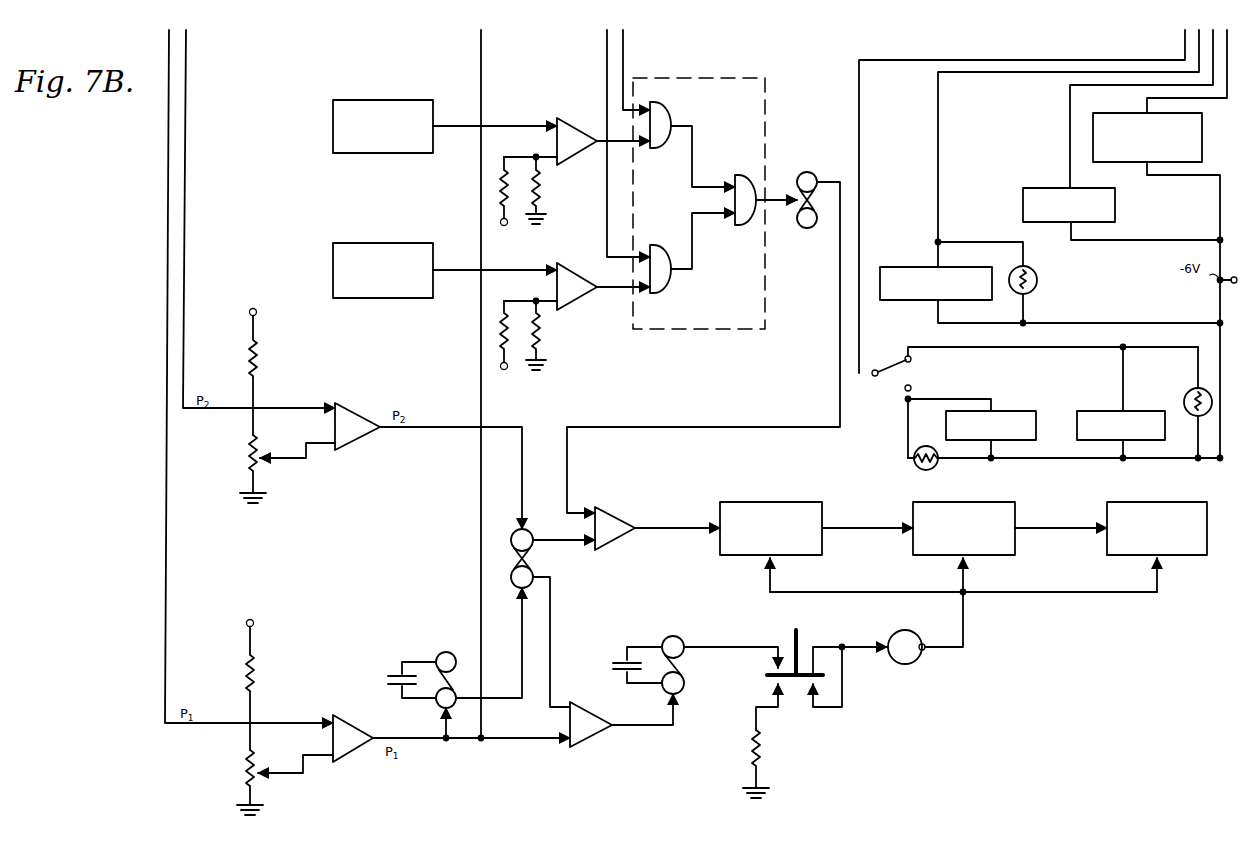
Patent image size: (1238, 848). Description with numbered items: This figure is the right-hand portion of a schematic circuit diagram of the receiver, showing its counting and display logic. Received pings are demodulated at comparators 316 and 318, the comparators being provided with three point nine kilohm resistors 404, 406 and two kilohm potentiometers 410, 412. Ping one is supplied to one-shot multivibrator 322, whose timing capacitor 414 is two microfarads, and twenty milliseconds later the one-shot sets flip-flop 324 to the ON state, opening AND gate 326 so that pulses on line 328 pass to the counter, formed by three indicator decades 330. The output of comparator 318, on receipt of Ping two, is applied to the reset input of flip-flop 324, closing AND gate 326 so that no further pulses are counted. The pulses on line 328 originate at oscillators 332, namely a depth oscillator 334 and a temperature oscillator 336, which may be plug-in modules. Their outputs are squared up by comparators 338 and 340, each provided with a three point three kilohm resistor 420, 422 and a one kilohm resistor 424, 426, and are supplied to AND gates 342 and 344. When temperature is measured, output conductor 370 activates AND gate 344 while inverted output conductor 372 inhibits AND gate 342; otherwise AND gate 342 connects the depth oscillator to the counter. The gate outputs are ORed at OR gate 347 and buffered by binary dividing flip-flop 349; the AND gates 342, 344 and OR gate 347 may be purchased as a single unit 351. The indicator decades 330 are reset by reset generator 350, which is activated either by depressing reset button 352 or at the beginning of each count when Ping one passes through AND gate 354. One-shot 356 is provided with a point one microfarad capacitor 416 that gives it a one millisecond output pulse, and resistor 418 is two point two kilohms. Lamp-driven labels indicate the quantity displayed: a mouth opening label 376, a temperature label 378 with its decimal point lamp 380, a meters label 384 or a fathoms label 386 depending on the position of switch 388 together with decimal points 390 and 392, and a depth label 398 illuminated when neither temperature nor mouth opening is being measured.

The comparator 316 is at (358, 698).
The comparator 318 is at (355, 411).
The one-shot multivibrator 322 is at (435, 658).
The flip-flop 324 is at (535, 565).
The AND gate 326 is at (618, 510).
The line 328 is at (705, 428).
The indicator decades 330 is at (885, 507).
The oscillators 332 is at (293, 153).
The depth oscillator 334 is at (385, 100).
The temperature oscillator 336 is at (375, 243).
The comparator 338 is at (573, 118).
The comparator 340 is at (572, 265).
The AND gate 342 is at (668, 112).
The AND gate 344 is at (684, 248).
The OR gate 347 is at (746, 177).
The binary dividing flip-flop 349 is at (810, 172).
The reset generator 350 is at (912, 665).
The single unit 351 is at (760, 78).
The reset button 352 is at (810, 645).
The AND gate 354 is at (592, 745).
The one-shot 356 is at (685, 695).
The output conductor 370 is at (607, 56).
The inverted negative output conductor 372 is at (623, 50).
The mouth opening label 376 is at (1193, 164).
The temperature label 378 is at (908, 267).
The decimal point lamp 380 is at (1038, 280).
The meters label 384 is at (1010, 411).
The fathoms label 386 is at (1160, 400).
The switch 388 is at (882, 366).
The decimal point 390 is at (933, 468).
The decimal point 392 is at (1190, 390).
The depth label 398 is at (1115, 213).
The resistor 404 is at (262, 362).
The resistor 406 is at (245, 662).
The potentiometer 410 is at (240, 465).
The potentiometer 412 is at (240, 776).
The capacitor 414 is at (388, 675).
The capacitor 416 is at (612, 666).
The resistor 418 is at (765, 745).
The resistor 420 is at (500, 181).
The resistor 422 is at (500, 323).
The resistor 424 is at (541, 183).
The resistor 426 is at (541, 338).